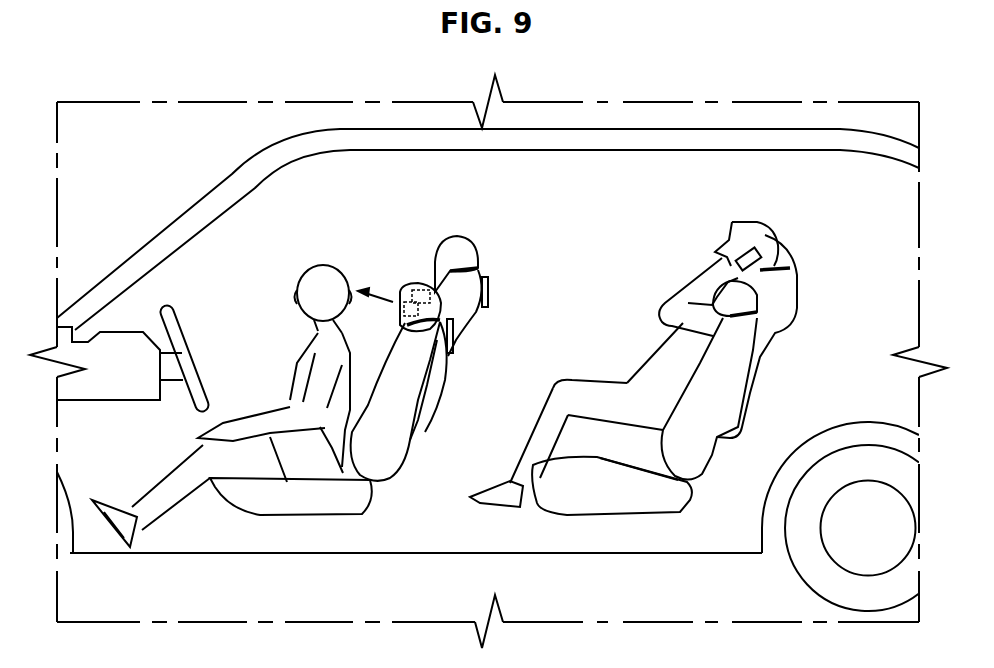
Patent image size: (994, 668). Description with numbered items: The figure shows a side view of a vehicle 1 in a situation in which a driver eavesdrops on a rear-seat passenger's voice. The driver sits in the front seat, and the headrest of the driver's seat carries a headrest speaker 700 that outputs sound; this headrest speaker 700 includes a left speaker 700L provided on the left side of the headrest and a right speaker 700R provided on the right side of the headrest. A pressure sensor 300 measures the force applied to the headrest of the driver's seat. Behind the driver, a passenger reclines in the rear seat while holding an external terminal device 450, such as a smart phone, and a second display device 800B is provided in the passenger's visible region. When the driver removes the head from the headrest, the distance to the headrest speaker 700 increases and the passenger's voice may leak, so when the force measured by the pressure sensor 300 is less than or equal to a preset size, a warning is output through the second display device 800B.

The vehicle 1 is at (180, 219).
The headrest speaker 700 is at (455, 204).
The left speaker 700L is at (398, 296).
The right speaker 700R is at (421, 283).
The second display device 800B is at (488, 280).
The pressure sensor 300 is at (453, 338).
The external terminal device 450 is at (778, 256).